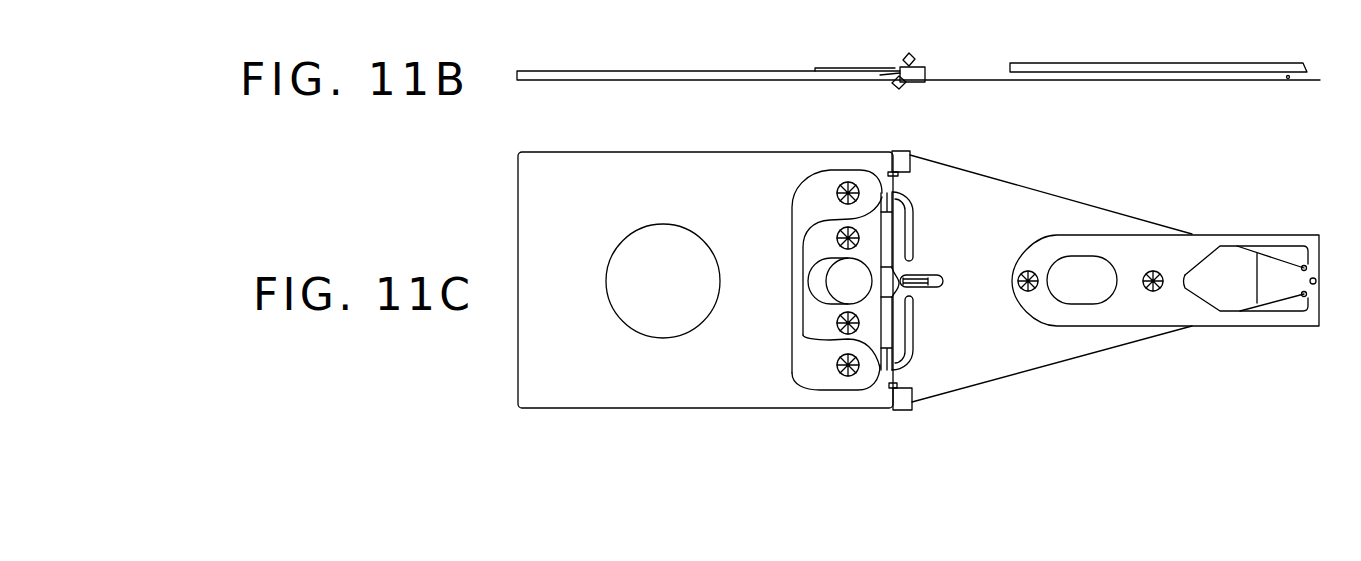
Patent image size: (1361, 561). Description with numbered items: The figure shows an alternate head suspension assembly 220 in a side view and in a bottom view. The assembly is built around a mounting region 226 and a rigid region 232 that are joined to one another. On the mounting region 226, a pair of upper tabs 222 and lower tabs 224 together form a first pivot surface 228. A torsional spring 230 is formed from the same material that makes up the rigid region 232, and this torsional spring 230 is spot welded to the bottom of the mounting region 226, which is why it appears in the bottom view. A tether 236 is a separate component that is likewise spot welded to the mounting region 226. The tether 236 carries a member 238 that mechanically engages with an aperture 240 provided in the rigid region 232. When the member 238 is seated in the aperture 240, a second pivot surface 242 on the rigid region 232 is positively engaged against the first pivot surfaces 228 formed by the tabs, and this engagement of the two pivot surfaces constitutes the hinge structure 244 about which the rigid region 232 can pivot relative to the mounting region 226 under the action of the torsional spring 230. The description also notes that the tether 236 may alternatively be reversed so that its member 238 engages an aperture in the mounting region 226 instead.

In FIG. 11C, the head suspension assembly 220 is at (1195, 365).
In FIG. 11B, the upper tabs 222 is at (905, 64).
In FIG. 11B, the lower tabs 224 is at (895, 82).
In FIG. 11C, the lower tabs 224 is at (898, 151).
In FIG. 11C, the mounting region 226 is at (565, 350).
In FIG. 11B, the first pivot surface 228 is at (915, 68).
In FIG. 11C, the torsional spring 230 is at (943, 281).
In FIG. 11B, the rigid region 232 is at (1158, 71).
In FIG. 11C, the rigid region 232 is at (1113, 224).
In FIG. 11C, the tether 236 is at (822, 273).
In FIG. 11C, the member 238 is at (920, 273).
In FIG. 11C, the aperture 240 is at (893, 327).
In FIG. 11C, the second pivot surface 242 is at (900, 185).
In FIG. 11B, the hinge structure 244 is at (926, 55).